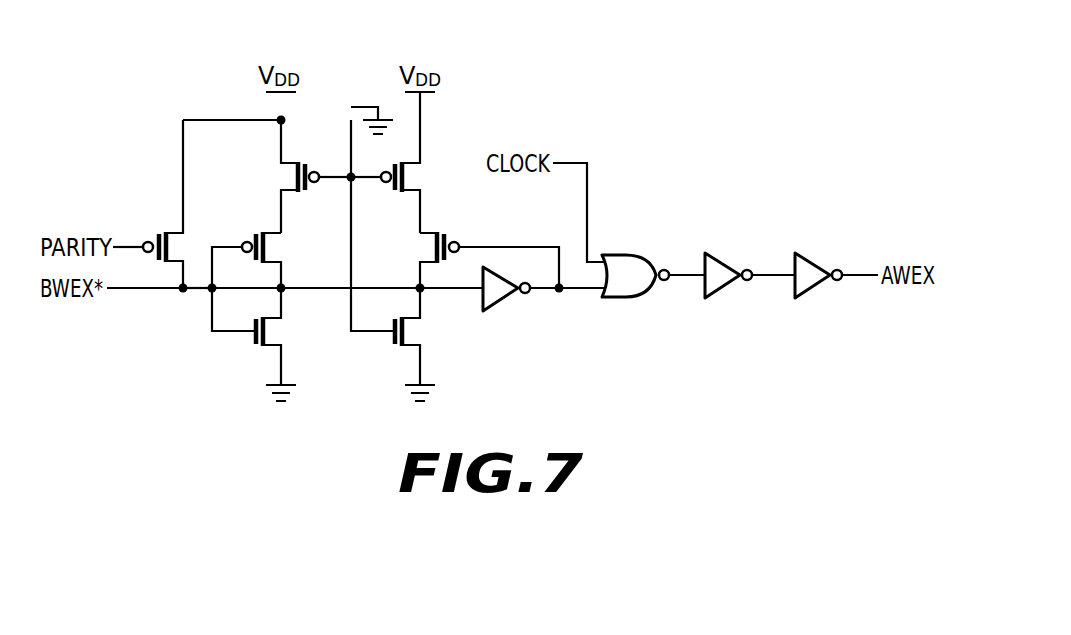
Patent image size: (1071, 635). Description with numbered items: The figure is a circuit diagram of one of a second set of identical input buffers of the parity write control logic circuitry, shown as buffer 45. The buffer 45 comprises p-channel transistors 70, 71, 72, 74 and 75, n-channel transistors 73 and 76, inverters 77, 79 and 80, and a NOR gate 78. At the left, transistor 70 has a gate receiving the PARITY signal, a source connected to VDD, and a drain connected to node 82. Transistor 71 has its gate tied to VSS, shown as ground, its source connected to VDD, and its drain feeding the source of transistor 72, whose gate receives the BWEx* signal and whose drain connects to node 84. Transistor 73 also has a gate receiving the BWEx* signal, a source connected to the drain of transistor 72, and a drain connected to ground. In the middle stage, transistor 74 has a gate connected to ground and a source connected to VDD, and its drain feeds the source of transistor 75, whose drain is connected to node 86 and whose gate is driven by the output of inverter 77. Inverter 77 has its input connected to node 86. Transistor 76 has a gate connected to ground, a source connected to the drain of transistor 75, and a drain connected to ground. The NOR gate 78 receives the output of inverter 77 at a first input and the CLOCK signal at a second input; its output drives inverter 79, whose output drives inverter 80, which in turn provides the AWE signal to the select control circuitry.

The buffer 45 is at (712, 60).
The p-channel transistor 70 is at (172, 230).
The p-channel transistor 71 is at (280, 177).
The p-channel transistor 72 is at (262, 232).
The n-channel transistor 73 is at (262, 348).
The p-channel transistor 74 is at (418, 177).
The p-channel transistor 75 is at (440, 231).
The n-channel transistor 76 is at (402, 348).
The inverter 77 is at (500, 304).
The NOR gate 78 is at (650, 296).
The inverter 79 is at (730, 294).
The inverter 80 is at (805, 294).
The node 82 is at (184, 292).
The node 84 is at (285, 284).
The node 86 is at (417, 284).